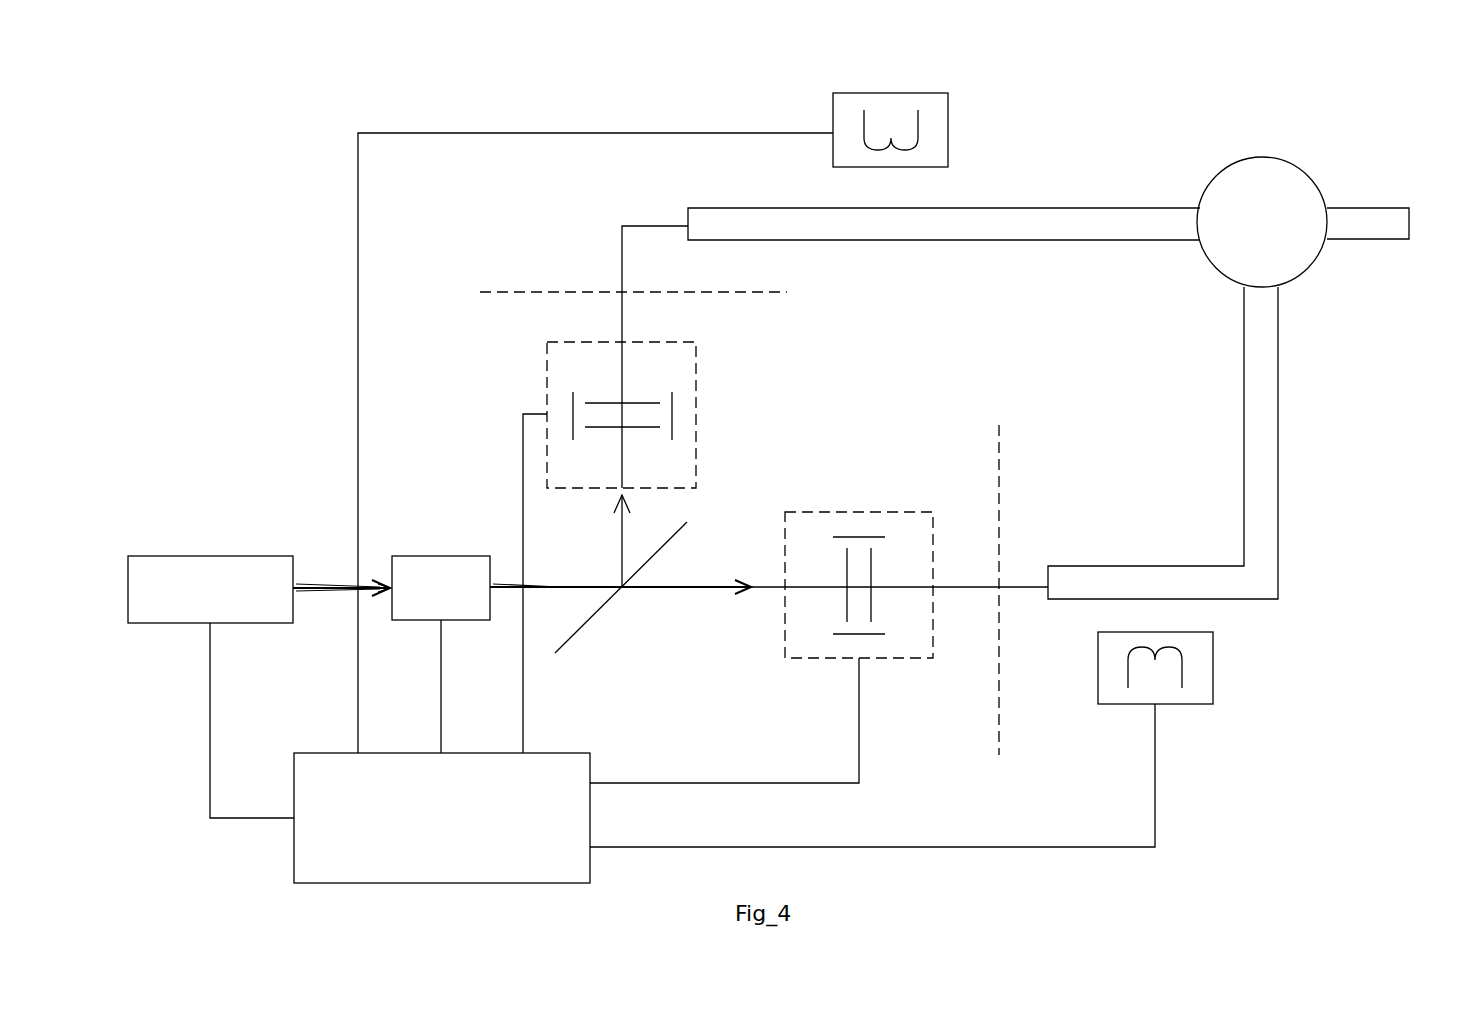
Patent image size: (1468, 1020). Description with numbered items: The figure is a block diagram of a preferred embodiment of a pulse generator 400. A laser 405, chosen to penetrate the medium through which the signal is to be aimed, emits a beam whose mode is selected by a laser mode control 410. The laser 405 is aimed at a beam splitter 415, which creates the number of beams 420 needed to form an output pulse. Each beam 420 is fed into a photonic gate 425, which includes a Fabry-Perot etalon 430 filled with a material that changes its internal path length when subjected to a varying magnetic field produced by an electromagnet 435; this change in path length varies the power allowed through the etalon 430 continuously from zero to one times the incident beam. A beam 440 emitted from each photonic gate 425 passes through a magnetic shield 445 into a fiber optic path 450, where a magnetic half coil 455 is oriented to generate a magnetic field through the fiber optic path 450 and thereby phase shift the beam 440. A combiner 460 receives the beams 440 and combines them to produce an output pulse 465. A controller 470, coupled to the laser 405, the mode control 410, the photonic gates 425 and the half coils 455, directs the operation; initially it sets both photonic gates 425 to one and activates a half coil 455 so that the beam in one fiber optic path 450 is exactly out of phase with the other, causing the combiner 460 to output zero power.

The pulse generator 400 is at (283, 173).
The laser 405 is at (208, 555).
The laser mode control 410 is at (420, 555).
The beam splitter 415 is at (680, 538).
The beam 420 is at (619, 552).
The photonic gate 425 is at (700, 396).
The Fabry-Perot etalon 430 is at (645, 377).
The electromagnet 435 is at (567, 395).
The beam 440 is at (615, 312).
The magnetic shield 445 is at (480, 292).
The fiber optic path 450 is at (1018, 195).
The magnetic half coil 455 is at (958, 137).
The combiner 460 is at (1250, 153).
The output pulse 465 is at (1352, 205).
The controller 470 is at (568, 750).